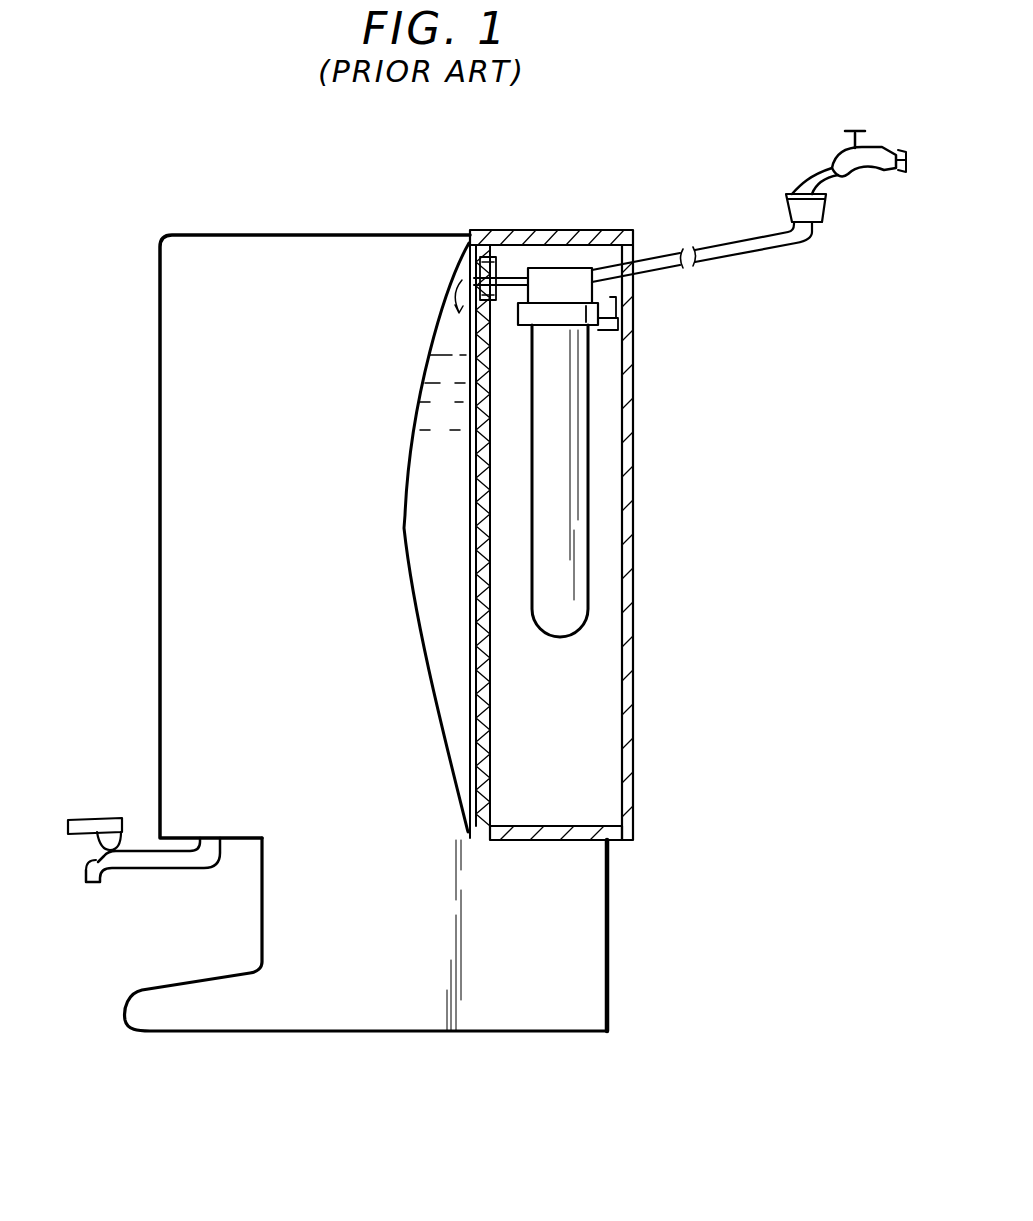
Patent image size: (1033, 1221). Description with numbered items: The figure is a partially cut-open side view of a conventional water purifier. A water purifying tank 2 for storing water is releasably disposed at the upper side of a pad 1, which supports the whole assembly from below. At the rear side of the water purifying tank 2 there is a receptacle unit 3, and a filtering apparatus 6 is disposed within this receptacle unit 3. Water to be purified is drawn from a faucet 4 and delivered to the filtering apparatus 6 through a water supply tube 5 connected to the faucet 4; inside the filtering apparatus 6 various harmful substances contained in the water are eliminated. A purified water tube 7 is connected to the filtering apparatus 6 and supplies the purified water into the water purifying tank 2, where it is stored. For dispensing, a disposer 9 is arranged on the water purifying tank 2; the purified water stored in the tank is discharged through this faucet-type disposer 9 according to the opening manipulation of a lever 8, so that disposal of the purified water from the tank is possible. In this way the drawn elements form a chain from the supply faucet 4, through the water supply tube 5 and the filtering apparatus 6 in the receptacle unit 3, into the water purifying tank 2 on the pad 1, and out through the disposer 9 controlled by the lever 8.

The pad 1 is at (428, 1003).
The water purifying tank 2 is at (188, 313).
The receptacle unit 3 is at (565, 755).
The faucet 4 is at (860, 170).
The water supply tube 5 is at (740, 246).
The filtering apparatus 6 is at (565, 540).
The purified water tube 7 is at (515, 262).
The lever 8 is at (80, 822).
The disposer 9 is at (88, 873).